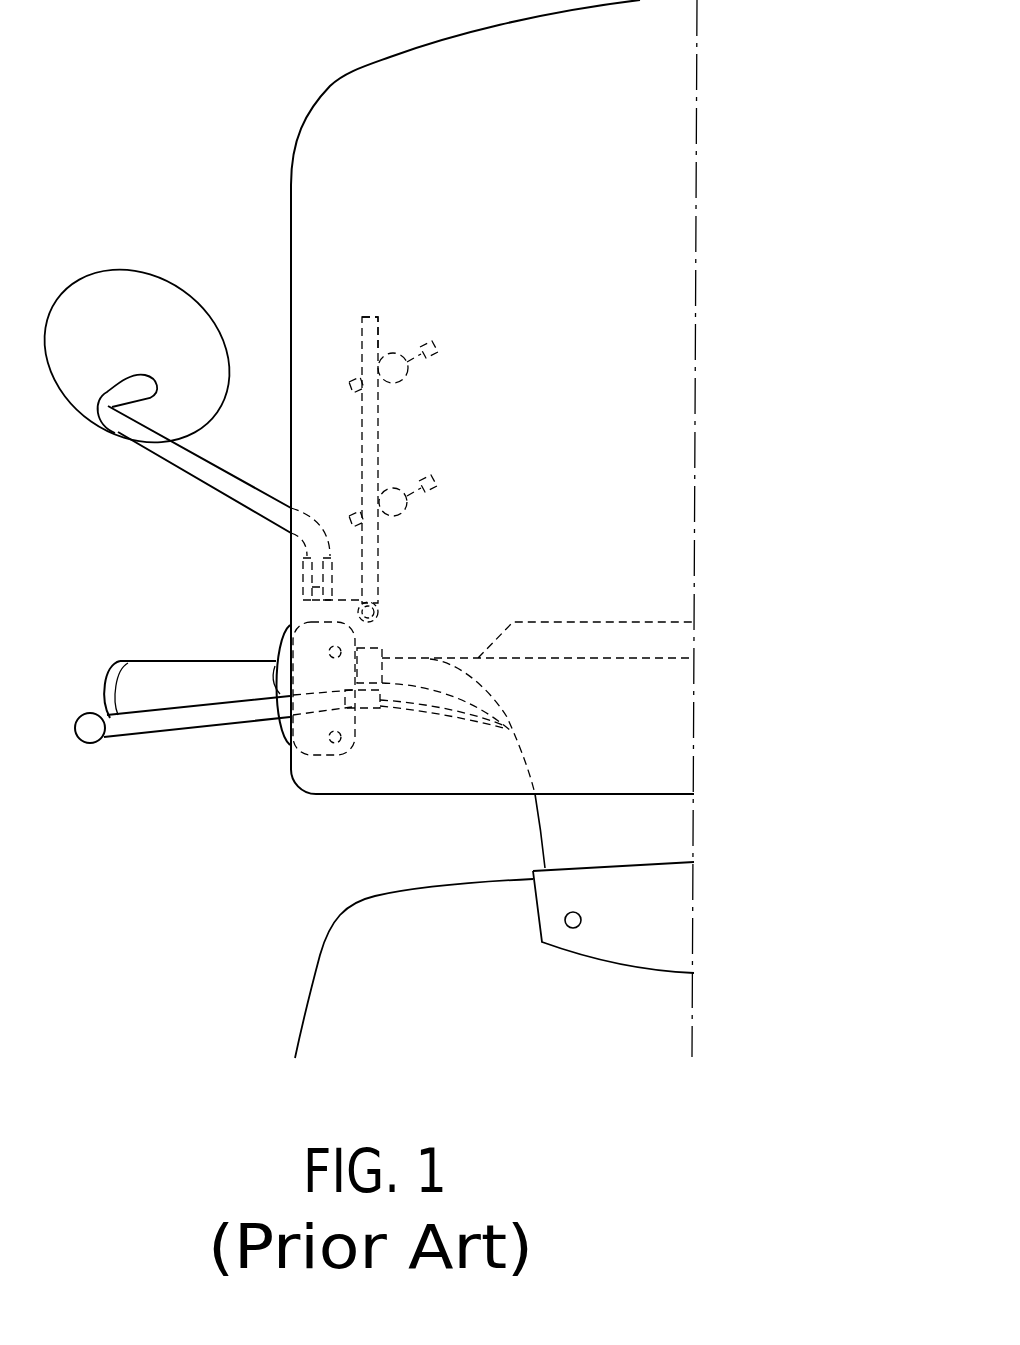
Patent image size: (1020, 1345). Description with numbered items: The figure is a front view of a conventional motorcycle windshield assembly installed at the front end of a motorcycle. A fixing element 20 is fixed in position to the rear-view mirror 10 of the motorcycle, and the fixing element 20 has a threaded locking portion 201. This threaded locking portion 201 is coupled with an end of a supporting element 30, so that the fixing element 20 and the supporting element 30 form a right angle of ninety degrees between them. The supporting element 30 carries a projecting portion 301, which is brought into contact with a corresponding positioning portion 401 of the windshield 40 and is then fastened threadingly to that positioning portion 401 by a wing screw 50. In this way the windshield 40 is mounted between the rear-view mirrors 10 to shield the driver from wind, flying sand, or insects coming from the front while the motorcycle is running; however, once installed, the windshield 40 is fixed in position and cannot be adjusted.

The rear-view mirror 10 is at (205, 468).
The fixing element 20 is at (300, 617).
The threaded locking portion 201 is at (380, 610).
The supporting element 30 is at (370, 548).
The projecting portion 301 is at (378, 352).
The windshield 40 is at (330, 203).
The positioning portion 401 is at (397, 378).
The wing screw 50 is at (432, 356).